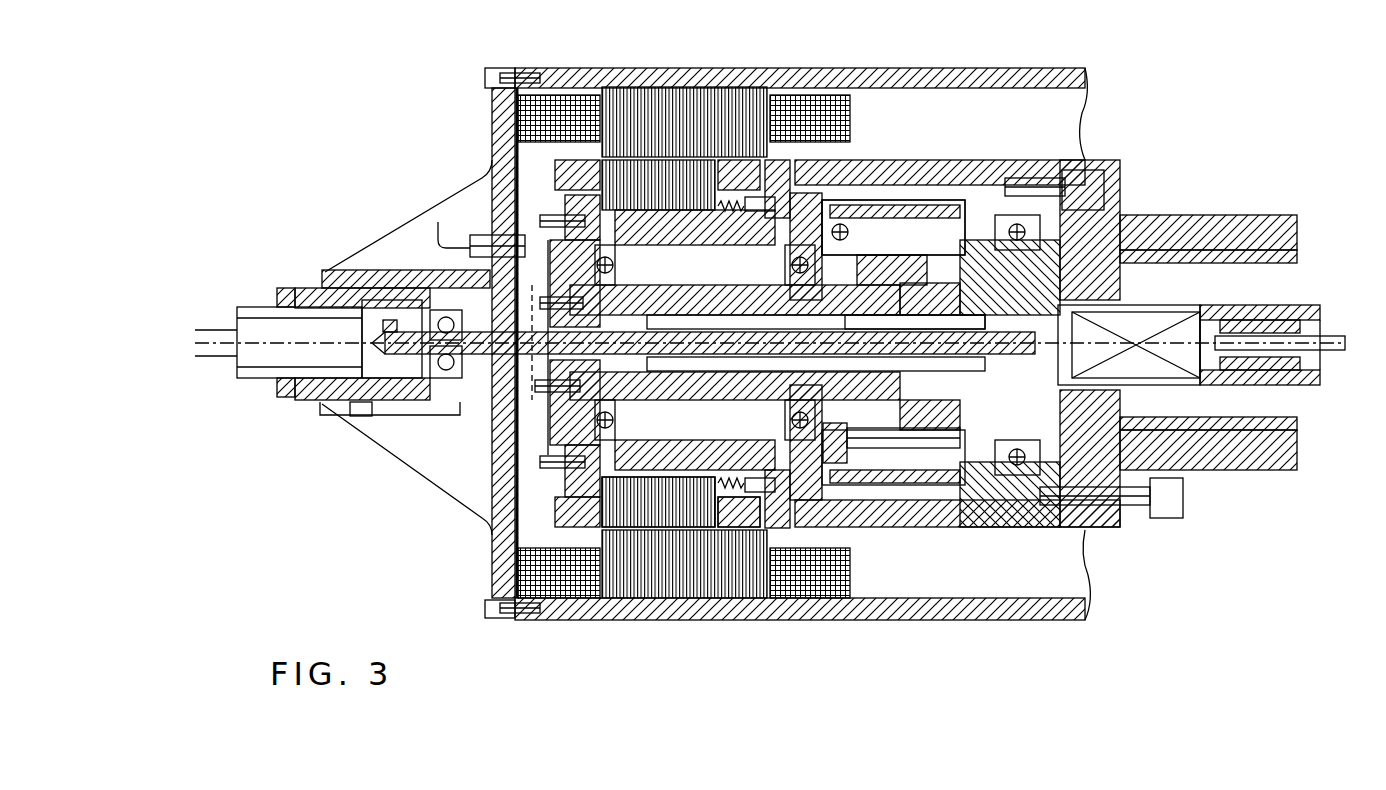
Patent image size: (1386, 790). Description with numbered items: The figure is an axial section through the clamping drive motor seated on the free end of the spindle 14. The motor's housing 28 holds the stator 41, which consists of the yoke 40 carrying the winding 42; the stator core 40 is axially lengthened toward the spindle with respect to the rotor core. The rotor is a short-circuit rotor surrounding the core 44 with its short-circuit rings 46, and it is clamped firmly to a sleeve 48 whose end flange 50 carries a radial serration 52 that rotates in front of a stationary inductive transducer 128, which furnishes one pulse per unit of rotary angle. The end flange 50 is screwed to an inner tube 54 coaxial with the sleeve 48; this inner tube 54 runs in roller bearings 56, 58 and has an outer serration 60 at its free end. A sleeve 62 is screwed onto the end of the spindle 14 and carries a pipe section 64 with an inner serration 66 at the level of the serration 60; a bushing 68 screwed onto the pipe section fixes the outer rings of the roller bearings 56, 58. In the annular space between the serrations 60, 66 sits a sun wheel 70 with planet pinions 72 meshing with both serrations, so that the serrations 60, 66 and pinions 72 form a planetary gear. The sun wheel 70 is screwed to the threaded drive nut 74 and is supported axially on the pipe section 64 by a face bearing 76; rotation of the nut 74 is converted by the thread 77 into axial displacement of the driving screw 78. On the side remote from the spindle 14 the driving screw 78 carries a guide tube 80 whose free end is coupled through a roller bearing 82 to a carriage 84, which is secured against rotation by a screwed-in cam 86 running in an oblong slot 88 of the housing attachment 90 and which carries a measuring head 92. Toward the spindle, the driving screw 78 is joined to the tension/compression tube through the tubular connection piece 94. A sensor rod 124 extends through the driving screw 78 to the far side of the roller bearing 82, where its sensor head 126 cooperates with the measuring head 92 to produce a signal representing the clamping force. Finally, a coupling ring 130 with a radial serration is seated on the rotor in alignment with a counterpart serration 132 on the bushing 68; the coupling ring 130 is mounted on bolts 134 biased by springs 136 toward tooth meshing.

The spindle 14 is at (1243, 250).
The housing 28 is at (1000, 615).
The yoke 40 is at (612, 590).
The stator 41 is at (540, 530).
The winding 42 is at (553, 600).
The core 44 is at (626, 165).
The short-circuit rings 46 is at (565, 175).
The sleeve 48 is at (657, 223).
The end flange 50 is at (545, 437).
The radial serration 52 is at (490, 435).
The inner tube 54 is at (698, 400).
The roller bearing 56 is at (612, 430).
The roller bearing 58 is at (790, 420).
The outer serration 60 is at (845, 317).
The sleeve 62 is at (1130, 180).
The pipe section 64 is at (1008, 165).
The inner serration 66 is at (905, 498).
The bushing 68 is at (728, 240).
The sun wheel 70 is at (885, 478).
The planet pinions 72 is at (898, 205).
The threaded drive nut 74 is at (978, 458).
The face bearing 76 is at (1028, 465).
The thread 77 is at (975, 378).
The driving screw 78 is at (878, 366).
The guide tube 80 is at (677, 365).
The roller bearing 82 is at (455, 333).
The carriage 84 is at (310, 383).
The cam 86 is at (355, 420).
The oblong slot 88 is at (398, 413).
The housing attachment 90 is at (322, 278).
The measuring head 92 is at (250, 375).
The tubular connection piece 94 is at (1310, 300).
The sensor rod 124 is at (1330, 352).
The sensor head 126 is at (386, 325).
The inductive transducer 128 is at (480, 238).
The coupling ring 130 is at (782, 165).
The counterpart serration 132 is at (790, 580).
The bolts 134 is at (760, 600).
The springs 136 is at (712, 578).